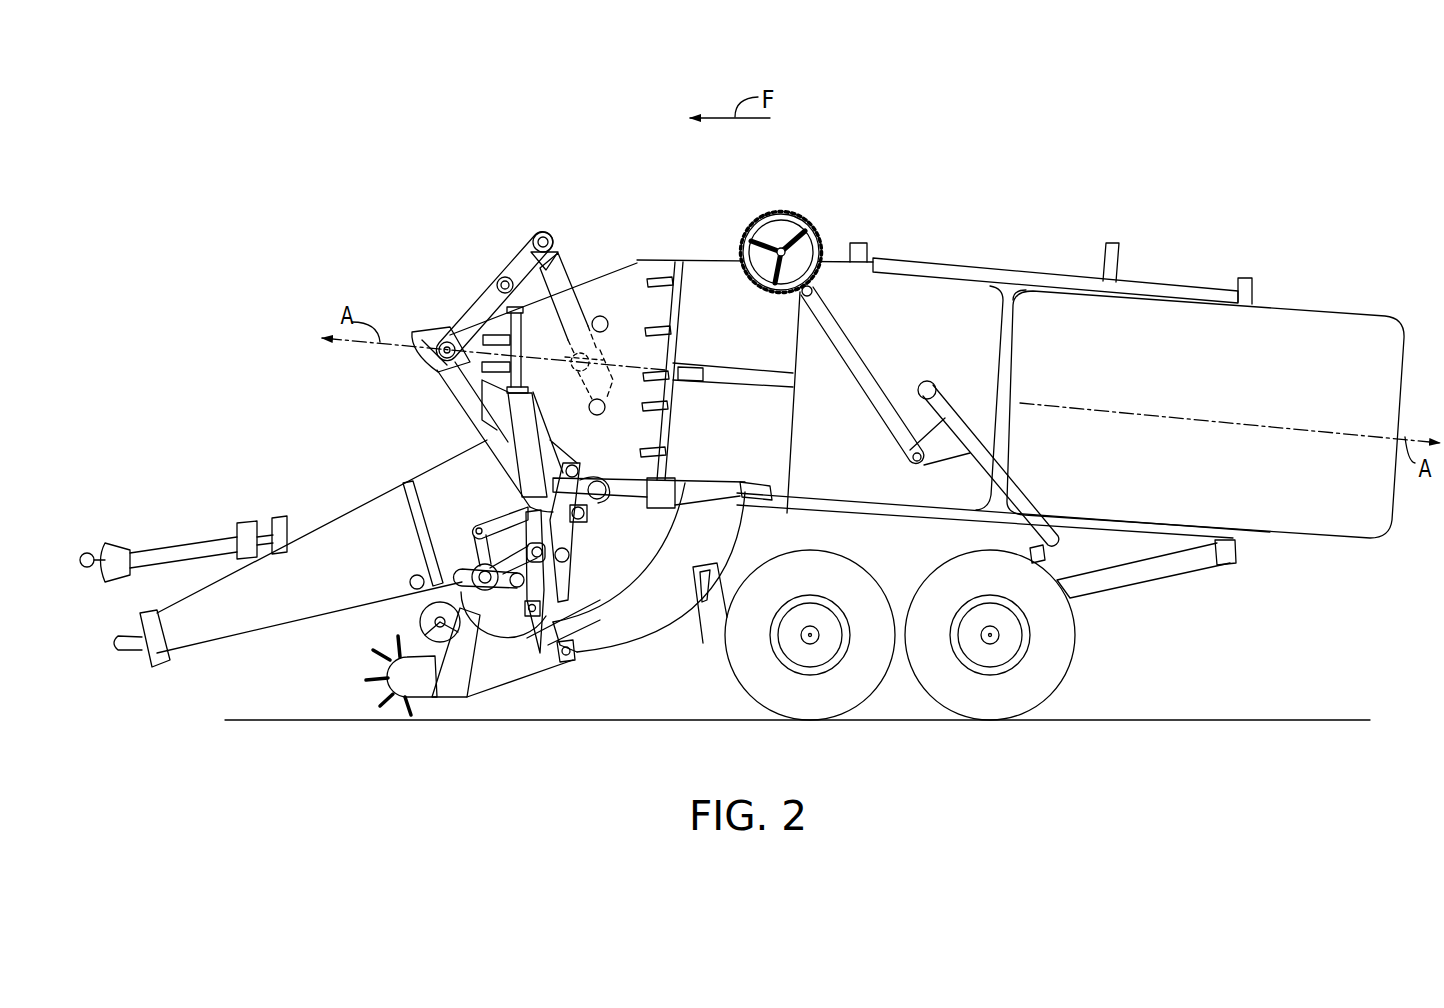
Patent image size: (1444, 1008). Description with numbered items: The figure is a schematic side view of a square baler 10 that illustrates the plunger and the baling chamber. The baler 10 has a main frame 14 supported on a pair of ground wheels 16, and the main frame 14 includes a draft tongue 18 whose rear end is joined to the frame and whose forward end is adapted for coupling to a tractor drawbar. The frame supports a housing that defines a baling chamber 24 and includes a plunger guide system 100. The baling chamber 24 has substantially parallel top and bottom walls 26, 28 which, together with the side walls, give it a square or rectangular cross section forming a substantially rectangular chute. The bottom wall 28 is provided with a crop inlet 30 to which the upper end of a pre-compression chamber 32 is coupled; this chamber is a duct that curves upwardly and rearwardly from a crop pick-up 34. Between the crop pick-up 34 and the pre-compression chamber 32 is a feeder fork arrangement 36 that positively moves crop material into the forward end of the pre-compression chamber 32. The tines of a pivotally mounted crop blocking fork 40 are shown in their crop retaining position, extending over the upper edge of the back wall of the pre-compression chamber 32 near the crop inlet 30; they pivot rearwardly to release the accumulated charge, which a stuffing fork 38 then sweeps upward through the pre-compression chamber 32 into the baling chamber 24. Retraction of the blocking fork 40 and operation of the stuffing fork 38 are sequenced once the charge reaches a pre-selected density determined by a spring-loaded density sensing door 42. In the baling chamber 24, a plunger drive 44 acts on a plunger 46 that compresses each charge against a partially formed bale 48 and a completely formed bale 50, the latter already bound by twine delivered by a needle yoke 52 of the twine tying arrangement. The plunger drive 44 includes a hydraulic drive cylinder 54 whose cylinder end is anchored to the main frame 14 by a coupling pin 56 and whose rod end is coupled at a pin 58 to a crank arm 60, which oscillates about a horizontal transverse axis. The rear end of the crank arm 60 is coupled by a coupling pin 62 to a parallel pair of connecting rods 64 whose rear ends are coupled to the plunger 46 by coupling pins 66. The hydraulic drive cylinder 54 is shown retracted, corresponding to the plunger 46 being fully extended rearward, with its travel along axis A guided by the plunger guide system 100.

The baler 10 is at (976, 234).
The main frame 14 is at (1124, 598).
The ground wheels 16 is at (933, 685).
The draft tongue 18 is at (307, 598).
The baling chamber 24 is at (1171, 280).
The top wall 26 is at (722, 258).
The bottom wall 28 is at (767, 493).
The crop inlet 30 is at (693, 483).
The pre-compression chamber 32 is at (660, 625).
The crop pick-up 34 is at (344, 654).
The feeder fork arrangement 36 is at (489, 507).
The stuffing fork 38 is at (586, 554).
The crop blocking fork 40 is at (718, 492).
The density sensing door 42 is at (577, 650).
The plunger drive 44 is at (484, 262).
The plunger 46 is at (693, 325).
The partially formed bale 48 is at (929, 341).
The completely formed bale 50 is at (1204, 386).
The needle yoke 52 is at (1038, 466).
The hydraulic drive cylinder 54 is at (521, 443).
The coupling pin 56 is at (528, 249).
The pin 58 is at (427, 373).
The crank arm 60 is at (481, 300).
The coupling pin 62 is at (547, 236).
The connecting rods 64 is at (578, 282).
The coupling pins 66 is at (598, 381).
The plunger guide system 100 is at (723, 352).